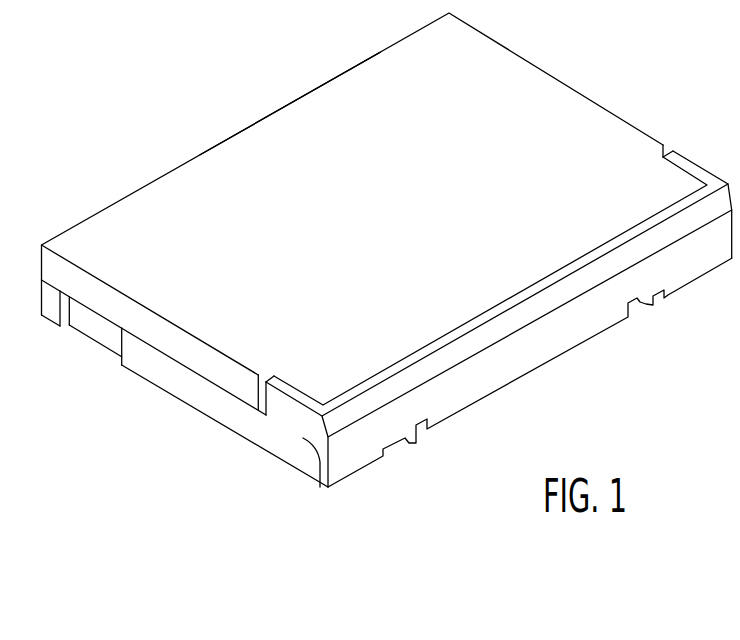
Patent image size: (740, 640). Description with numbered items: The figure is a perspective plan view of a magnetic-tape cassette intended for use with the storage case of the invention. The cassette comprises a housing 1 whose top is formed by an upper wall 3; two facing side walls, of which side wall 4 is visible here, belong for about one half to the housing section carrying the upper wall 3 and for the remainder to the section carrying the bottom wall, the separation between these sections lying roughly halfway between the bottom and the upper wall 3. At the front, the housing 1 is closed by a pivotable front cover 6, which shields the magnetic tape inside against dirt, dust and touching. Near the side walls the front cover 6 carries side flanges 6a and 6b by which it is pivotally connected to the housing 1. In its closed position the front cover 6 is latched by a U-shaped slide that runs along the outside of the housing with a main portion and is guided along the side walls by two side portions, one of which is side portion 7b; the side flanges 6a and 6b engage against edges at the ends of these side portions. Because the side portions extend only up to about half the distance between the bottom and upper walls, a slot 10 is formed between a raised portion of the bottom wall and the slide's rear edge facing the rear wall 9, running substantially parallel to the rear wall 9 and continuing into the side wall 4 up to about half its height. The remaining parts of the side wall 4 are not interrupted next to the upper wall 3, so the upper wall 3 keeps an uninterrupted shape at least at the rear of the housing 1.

The housing 1 is at (377, 48).
The upper wall 3 is at (353, 214).
The side wall 4 is at (198, 360).
The front cover 6 is at (527, 344).
The side flange 6a is at (307, 427).
The side flange 6b is at (683, 163).
The side portion 7b is at (240, 423).
The rear wall 9 is at (297, 98).
The slot 10 is at (110, 335).